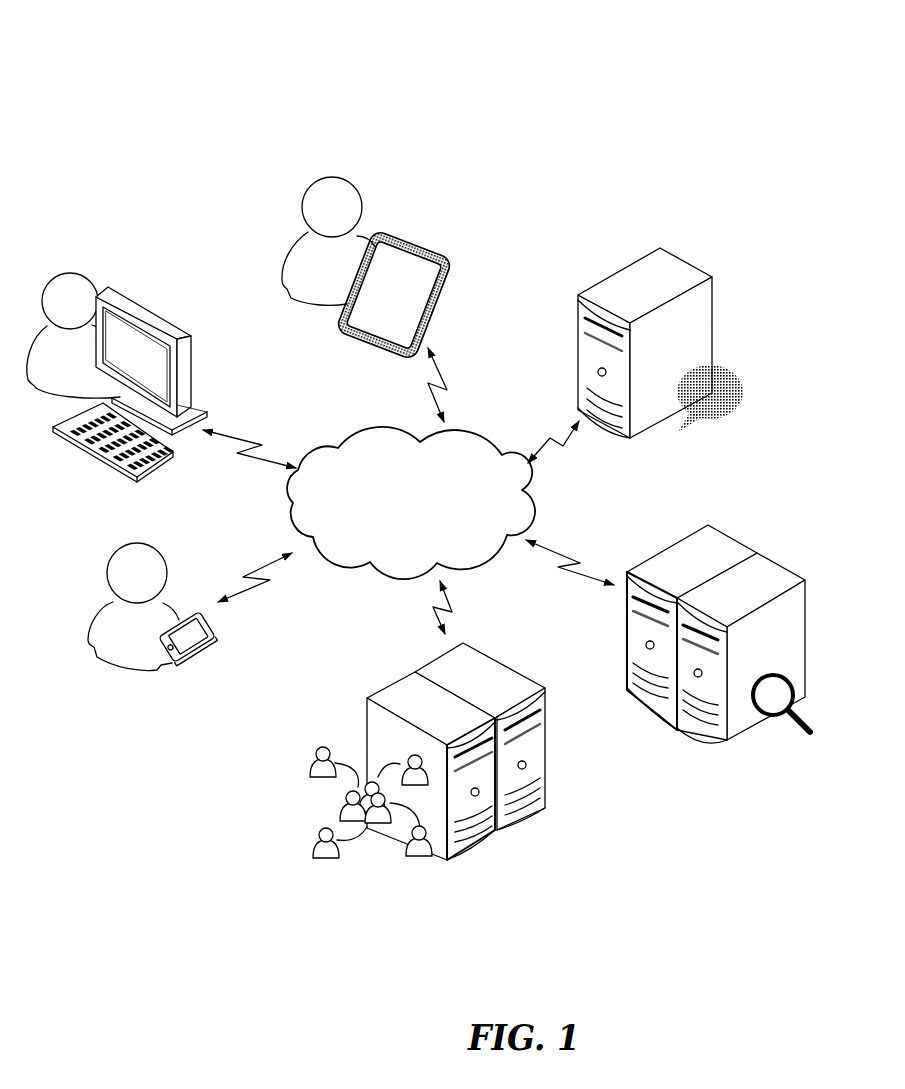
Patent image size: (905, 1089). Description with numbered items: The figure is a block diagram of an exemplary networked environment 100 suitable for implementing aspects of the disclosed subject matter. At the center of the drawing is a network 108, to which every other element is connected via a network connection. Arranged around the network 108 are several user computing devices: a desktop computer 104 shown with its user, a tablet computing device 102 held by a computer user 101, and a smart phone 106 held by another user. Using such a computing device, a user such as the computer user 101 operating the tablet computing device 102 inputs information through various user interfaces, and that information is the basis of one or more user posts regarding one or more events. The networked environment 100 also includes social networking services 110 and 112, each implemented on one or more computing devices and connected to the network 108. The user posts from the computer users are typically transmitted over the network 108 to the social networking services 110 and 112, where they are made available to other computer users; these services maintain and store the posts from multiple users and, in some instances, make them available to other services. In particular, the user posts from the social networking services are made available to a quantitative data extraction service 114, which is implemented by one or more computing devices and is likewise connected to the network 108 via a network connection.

The networked environment 100 is at (100, 111).
The computer user 101 is at (308, 205).
The tablet computing device 102 is at (442, 246).
The desktop computer 104 is at (135, 294).
The smart phone 106 is at (187, 663).
The network 108 is at (428, 526).
The social networking service 110 is at (700, 272).
The social networking service 112 is at (522, 830).
The quantitative data extraction service 114 is at (745, 550).